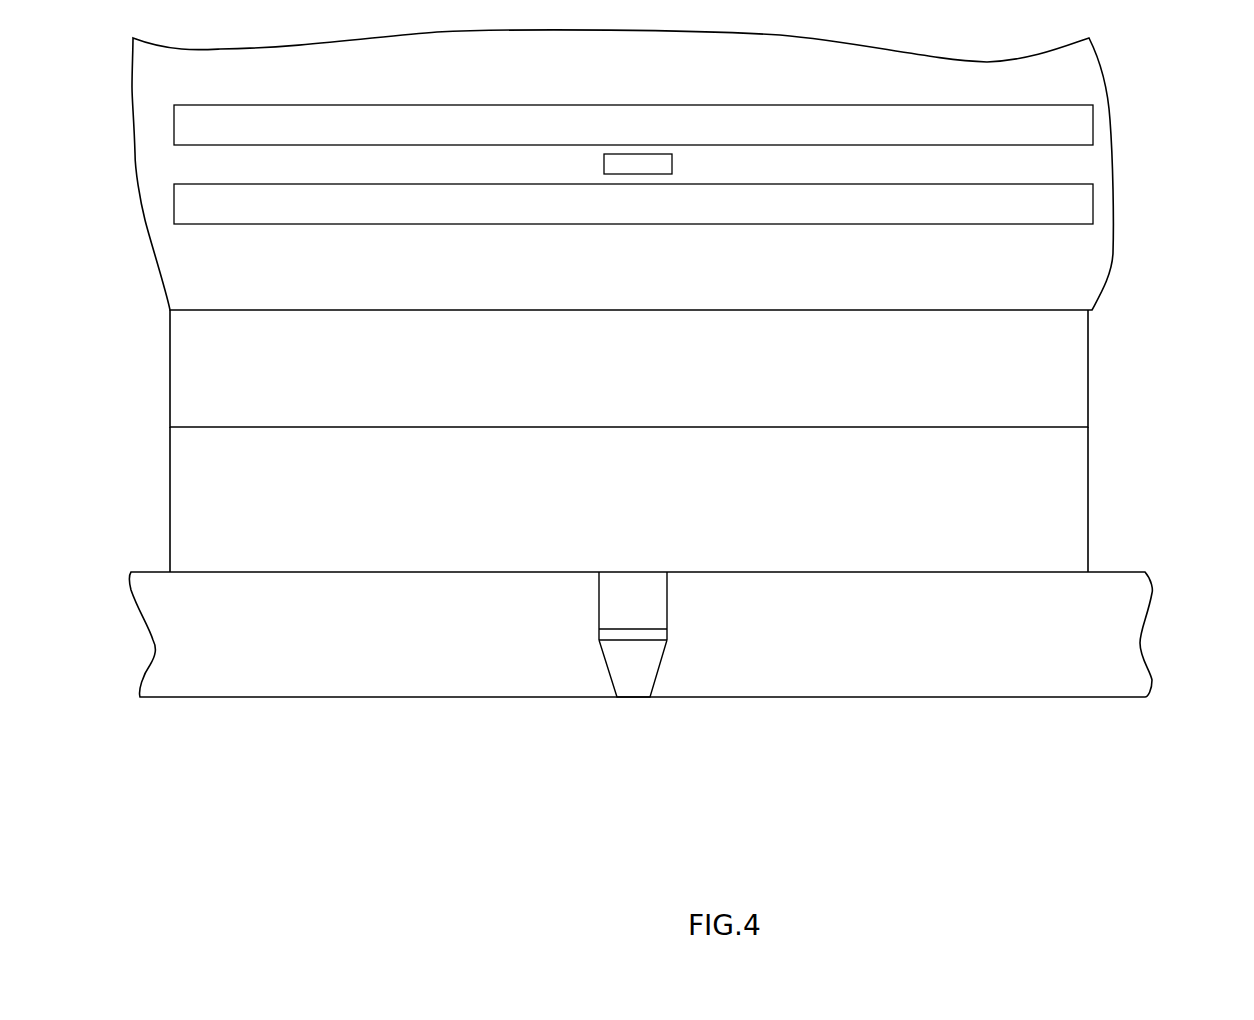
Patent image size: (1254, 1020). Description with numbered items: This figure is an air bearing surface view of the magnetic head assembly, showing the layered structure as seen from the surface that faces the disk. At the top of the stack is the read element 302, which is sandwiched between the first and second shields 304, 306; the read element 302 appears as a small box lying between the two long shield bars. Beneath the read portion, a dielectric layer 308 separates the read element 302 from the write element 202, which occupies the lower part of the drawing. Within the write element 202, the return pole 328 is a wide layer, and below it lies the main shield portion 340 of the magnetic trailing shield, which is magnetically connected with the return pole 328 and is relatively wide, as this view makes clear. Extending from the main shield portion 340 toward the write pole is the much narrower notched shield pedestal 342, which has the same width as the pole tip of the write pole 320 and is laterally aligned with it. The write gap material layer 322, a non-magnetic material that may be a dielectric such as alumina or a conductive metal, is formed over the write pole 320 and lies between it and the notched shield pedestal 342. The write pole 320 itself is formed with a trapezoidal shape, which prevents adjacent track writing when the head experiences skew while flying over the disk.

The write element 202 is at (1090, 322).
The read element 302 is at (663, 163).
The first shield 304 is at (853, 202).
The second shield 306 is at (807, 125).
The dielectric layer 308 is at (668, 262).
The write pole 320 is at (648, 665).
The write gap material layer 322 is at (658, 635).
The return pole 328 is at (860, 350).
The main shield portion 340 is at (1050, 467).
The notched shield pedestal 342 is at (643, 612).